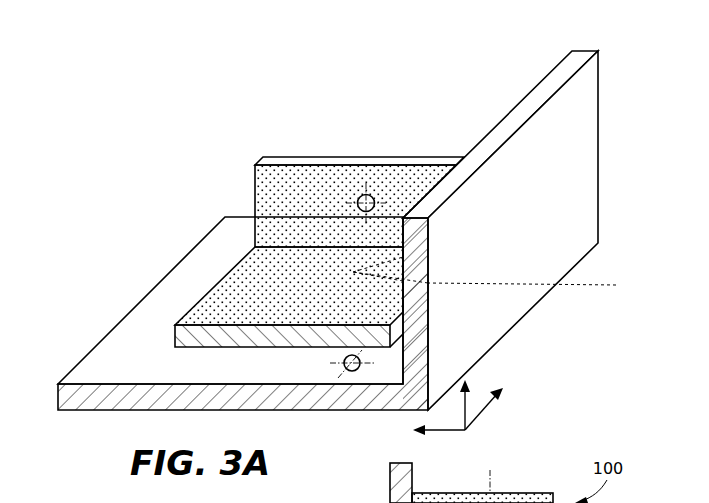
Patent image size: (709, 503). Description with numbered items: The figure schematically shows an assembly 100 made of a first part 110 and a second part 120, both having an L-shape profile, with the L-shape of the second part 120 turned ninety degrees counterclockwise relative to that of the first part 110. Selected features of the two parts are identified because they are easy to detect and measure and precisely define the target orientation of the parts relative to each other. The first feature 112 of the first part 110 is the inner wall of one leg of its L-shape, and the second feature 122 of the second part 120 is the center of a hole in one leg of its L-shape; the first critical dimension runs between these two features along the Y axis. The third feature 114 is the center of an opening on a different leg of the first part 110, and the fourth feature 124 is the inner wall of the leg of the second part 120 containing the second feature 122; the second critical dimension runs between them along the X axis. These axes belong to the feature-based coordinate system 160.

The assembly 100 is at (353, 257).
The first part 110 is at (505, 113).
The first feature 112 is at (501, 276).
The third feature 114 is at (351, 372).
The second part 120 is at (315, 166).
The second feature 122 is at (365, 193).
The fourth feature 124 is at (287, 174).
The feature-based coordinate system 160 is at (483, 412).